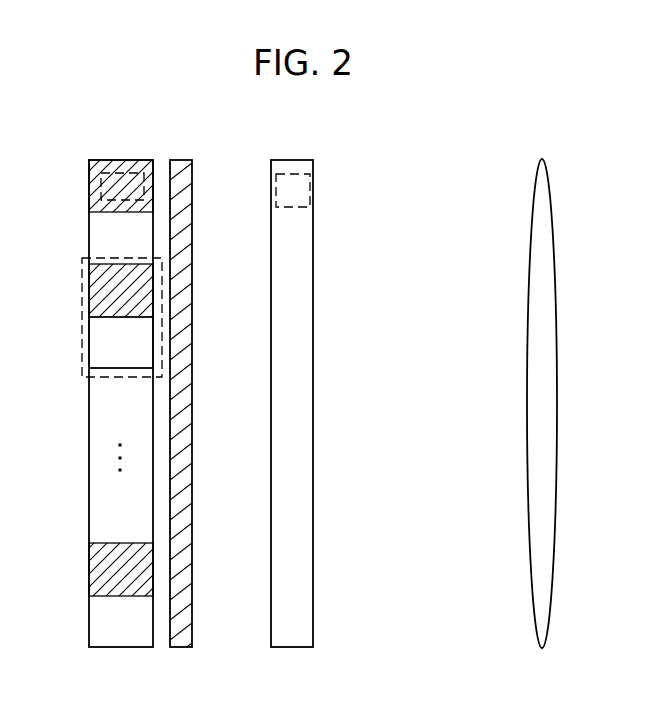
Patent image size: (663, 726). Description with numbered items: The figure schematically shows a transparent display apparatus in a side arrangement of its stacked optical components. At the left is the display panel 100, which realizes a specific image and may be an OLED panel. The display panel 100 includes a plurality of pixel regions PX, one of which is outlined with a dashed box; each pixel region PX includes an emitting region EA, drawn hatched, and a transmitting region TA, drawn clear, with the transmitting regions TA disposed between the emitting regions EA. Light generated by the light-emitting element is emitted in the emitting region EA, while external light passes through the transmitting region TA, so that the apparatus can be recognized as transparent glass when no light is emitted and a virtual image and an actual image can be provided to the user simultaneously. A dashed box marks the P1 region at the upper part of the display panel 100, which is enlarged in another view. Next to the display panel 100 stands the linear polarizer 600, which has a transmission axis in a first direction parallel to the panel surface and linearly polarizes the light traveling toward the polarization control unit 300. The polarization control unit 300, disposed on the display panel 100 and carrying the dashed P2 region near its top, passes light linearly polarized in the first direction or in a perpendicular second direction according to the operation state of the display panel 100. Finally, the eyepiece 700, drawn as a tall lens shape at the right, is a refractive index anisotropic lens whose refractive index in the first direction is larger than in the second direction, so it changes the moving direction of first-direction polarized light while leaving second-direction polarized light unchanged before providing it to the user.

The display panel 100 is at (122, 648).
The linear polarizer 600 is at (182, 648).
The polarization control unit 300 is at (293, 648).
The eyepiece 700 is at (542, 648).
The pixel region PX is at (82, 306).
The emitting region EA is at (121, 290).
The transmitting region TA is at (121, 342).
The P1 region P1 is at (118, 172).
The P2 region P2 is at (291, 172).